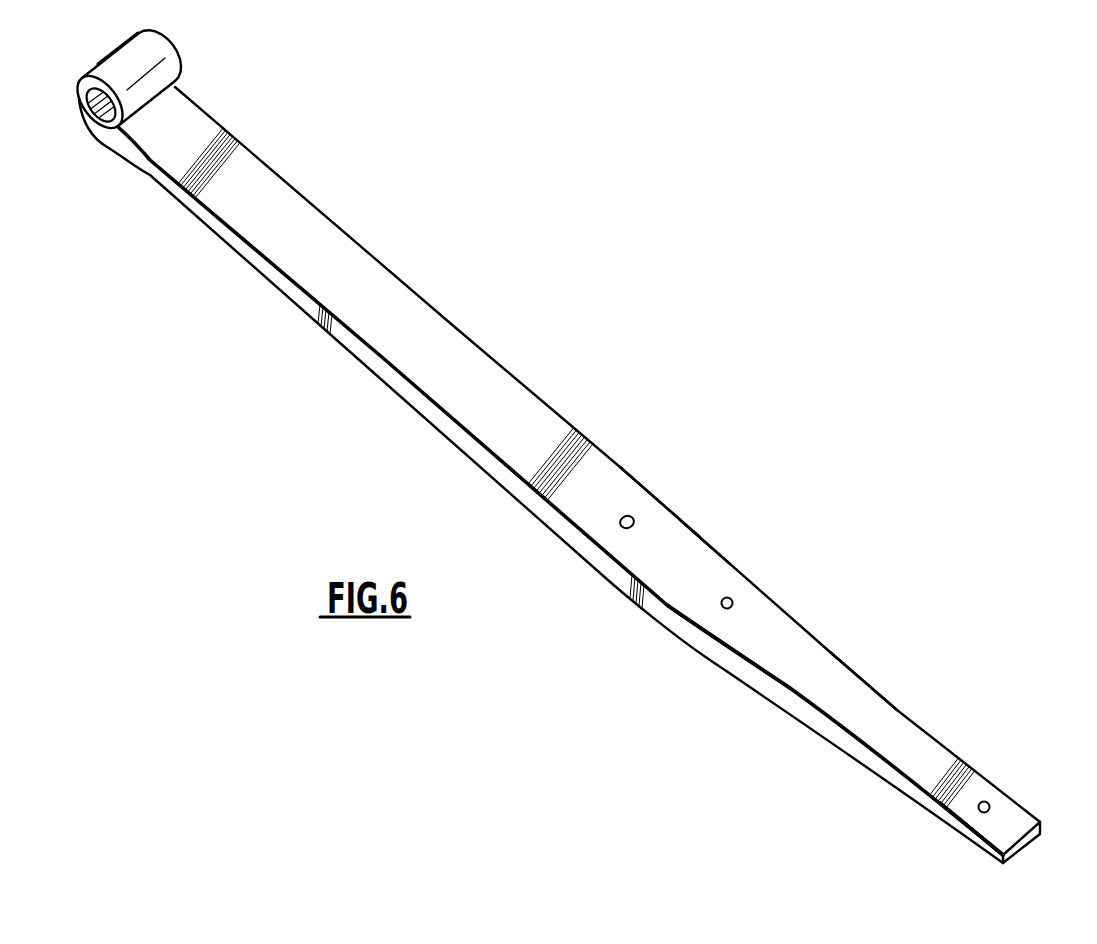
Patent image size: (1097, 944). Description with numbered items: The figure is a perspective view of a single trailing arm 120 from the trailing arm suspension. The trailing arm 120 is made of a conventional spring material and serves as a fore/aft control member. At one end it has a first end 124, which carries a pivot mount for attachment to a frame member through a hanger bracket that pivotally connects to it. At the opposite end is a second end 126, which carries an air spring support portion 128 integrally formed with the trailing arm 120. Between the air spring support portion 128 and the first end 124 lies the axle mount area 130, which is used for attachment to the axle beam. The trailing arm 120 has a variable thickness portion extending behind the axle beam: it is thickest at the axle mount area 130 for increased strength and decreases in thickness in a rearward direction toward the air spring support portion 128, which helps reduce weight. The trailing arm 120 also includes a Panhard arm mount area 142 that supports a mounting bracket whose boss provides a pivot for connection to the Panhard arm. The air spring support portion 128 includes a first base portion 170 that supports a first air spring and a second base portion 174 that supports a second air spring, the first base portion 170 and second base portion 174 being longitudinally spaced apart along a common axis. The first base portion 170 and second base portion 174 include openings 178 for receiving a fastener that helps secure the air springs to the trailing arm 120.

The trailing arm 120 is at (485, 382).
The first end 124 is at (113, 70).
The second end 126 is at (1023, 847).
The air spring support portion 128 is at (858, 680).
The axle mount area 130 is at (665, 502).
The Panhard arm mount area 142 is at (697, 530).
The first base portion 170 is at (735, 635).
The second base portion 174 is at (973, 793).
The openings 178 is at (733, 603).